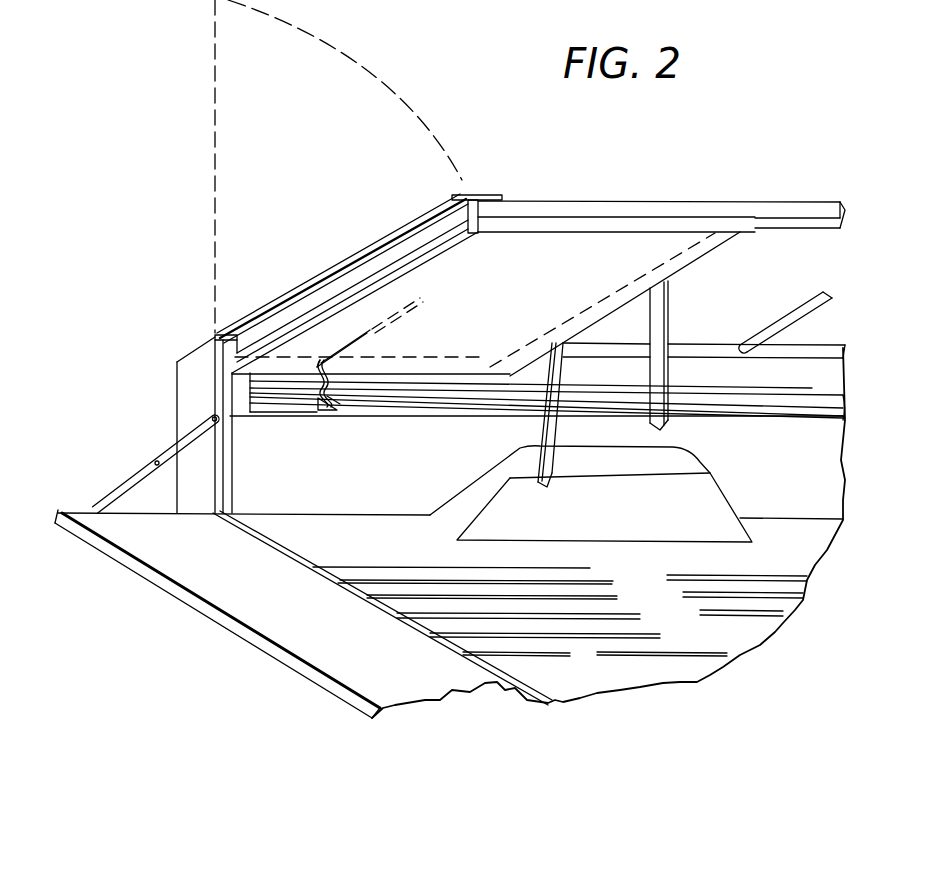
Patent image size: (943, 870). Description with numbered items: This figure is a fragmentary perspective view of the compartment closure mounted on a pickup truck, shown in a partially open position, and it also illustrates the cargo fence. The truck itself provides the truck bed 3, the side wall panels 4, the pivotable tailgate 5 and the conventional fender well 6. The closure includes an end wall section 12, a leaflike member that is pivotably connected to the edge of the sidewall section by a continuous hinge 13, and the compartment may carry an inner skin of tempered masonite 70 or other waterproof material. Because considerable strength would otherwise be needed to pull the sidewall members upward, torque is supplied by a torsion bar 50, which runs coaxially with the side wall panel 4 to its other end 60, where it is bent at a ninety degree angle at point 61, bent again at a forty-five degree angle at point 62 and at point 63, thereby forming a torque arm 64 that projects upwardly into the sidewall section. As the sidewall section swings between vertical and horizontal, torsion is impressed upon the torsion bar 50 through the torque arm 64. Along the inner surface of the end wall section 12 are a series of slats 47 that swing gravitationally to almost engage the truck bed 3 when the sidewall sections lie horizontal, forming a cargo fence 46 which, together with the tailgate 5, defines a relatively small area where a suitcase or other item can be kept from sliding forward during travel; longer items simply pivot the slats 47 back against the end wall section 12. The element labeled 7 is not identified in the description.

The truck bed 3 is at (579, 666).
The side wall panel 4 is at (792, 461).
The tailgate 5 is at (328, 650).
The fender well 6 is at (693, 520).
The rail 7 is at (748, 195).
The end wall section 12 is at (494, 306).
The continuous hinge 13 is at (470, 196).
The cargo fence 46 is at (614, 490).
The slats 47 is at (657, 313).
The torsion bar 50 is at (278, 398).
The other end of torsion bar 60 is at (395, 405).
The ninety-degree bend point 61 is at (317, 415).
The forty-five-degree bend point 62 is at (330, 403).
The bend point 63 is at (318, 366).
The torque arm 64 is at (367, 332).
The tempered masonite inner skin 70 is at (790, 248).